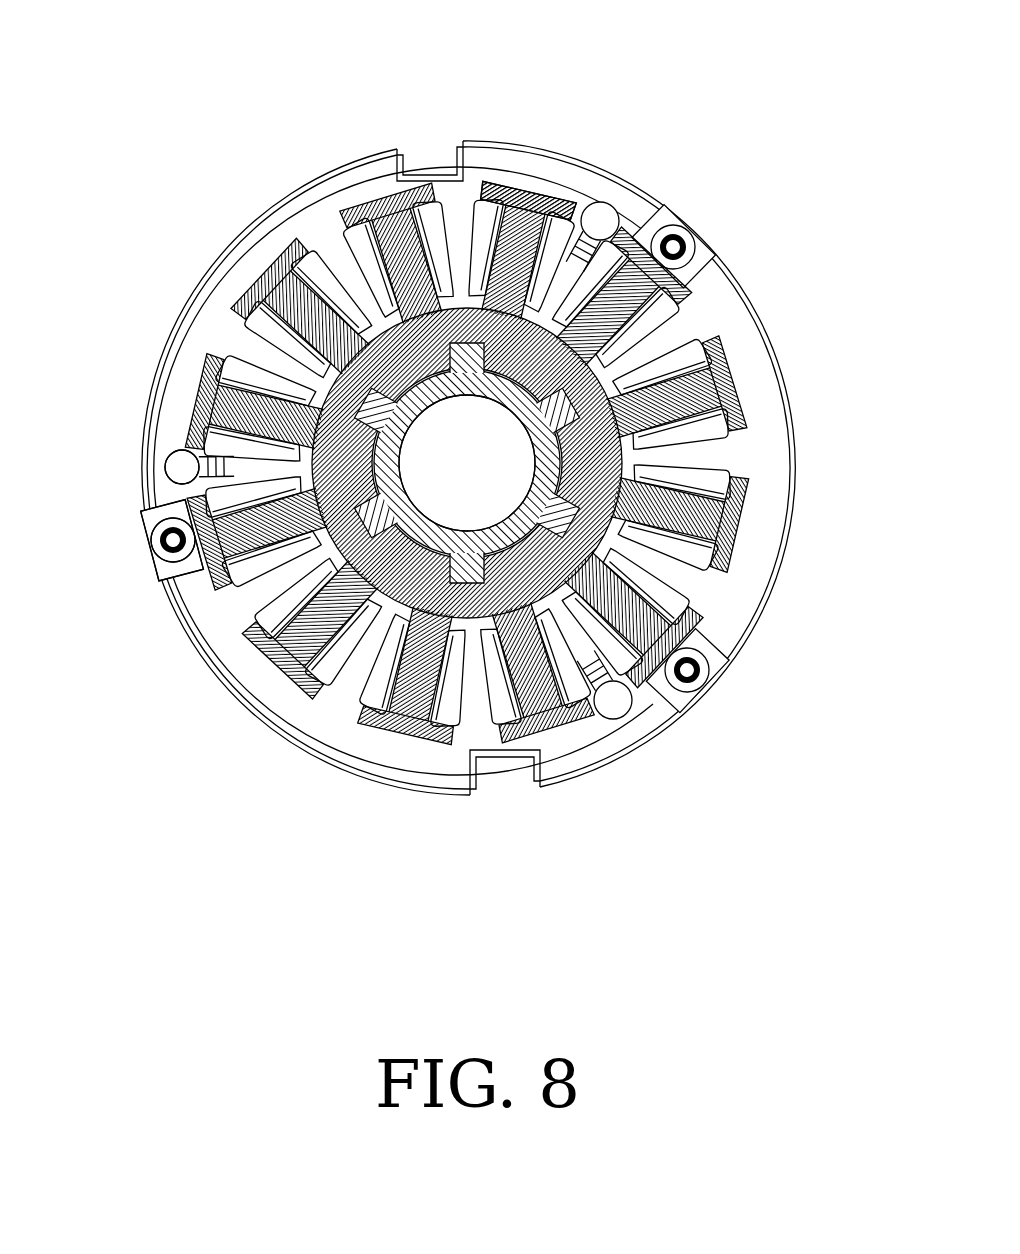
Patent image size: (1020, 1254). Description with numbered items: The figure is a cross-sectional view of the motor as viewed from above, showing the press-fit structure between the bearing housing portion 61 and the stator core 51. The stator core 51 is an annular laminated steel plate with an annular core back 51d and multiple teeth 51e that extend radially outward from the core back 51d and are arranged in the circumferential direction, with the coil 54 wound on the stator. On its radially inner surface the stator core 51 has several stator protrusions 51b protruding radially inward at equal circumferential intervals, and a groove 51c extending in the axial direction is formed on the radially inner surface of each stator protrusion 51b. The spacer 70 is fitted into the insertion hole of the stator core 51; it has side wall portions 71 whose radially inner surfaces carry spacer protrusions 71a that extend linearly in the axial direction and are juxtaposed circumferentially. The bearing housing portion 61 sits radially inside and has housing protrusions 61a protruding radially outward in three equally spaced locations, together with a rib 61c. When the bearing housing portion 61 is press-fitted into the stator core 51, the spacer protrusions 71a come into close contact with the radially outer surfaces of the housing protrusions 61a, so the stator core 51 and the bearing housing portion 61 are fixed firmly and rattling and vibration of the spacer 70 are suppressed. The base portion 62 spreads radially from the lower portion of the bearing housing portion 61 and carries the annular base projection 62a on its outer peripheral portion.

The stator core 51 is at (386, 210).
The stator protrusion 51b is at (325, 290).
The groove 51c is at (337, 240).
The core back 51d is at (157, 543).
The teeth 51e is at (513, 207).
The coil 54 is at (480, 237).
The bearing housing portion 61 is at (187, 407).
The housing protrusion 61a is at (673, 213).
The rib 61c is at (573, 197).
The base portion 62 is at (730, 330).
The base projection 62a is at (170, 570).
The spacer 70 is at (167, 483).
The side wall portion 71 is at (265, 270).
The spacer protrusion 71a is at (527, 500).